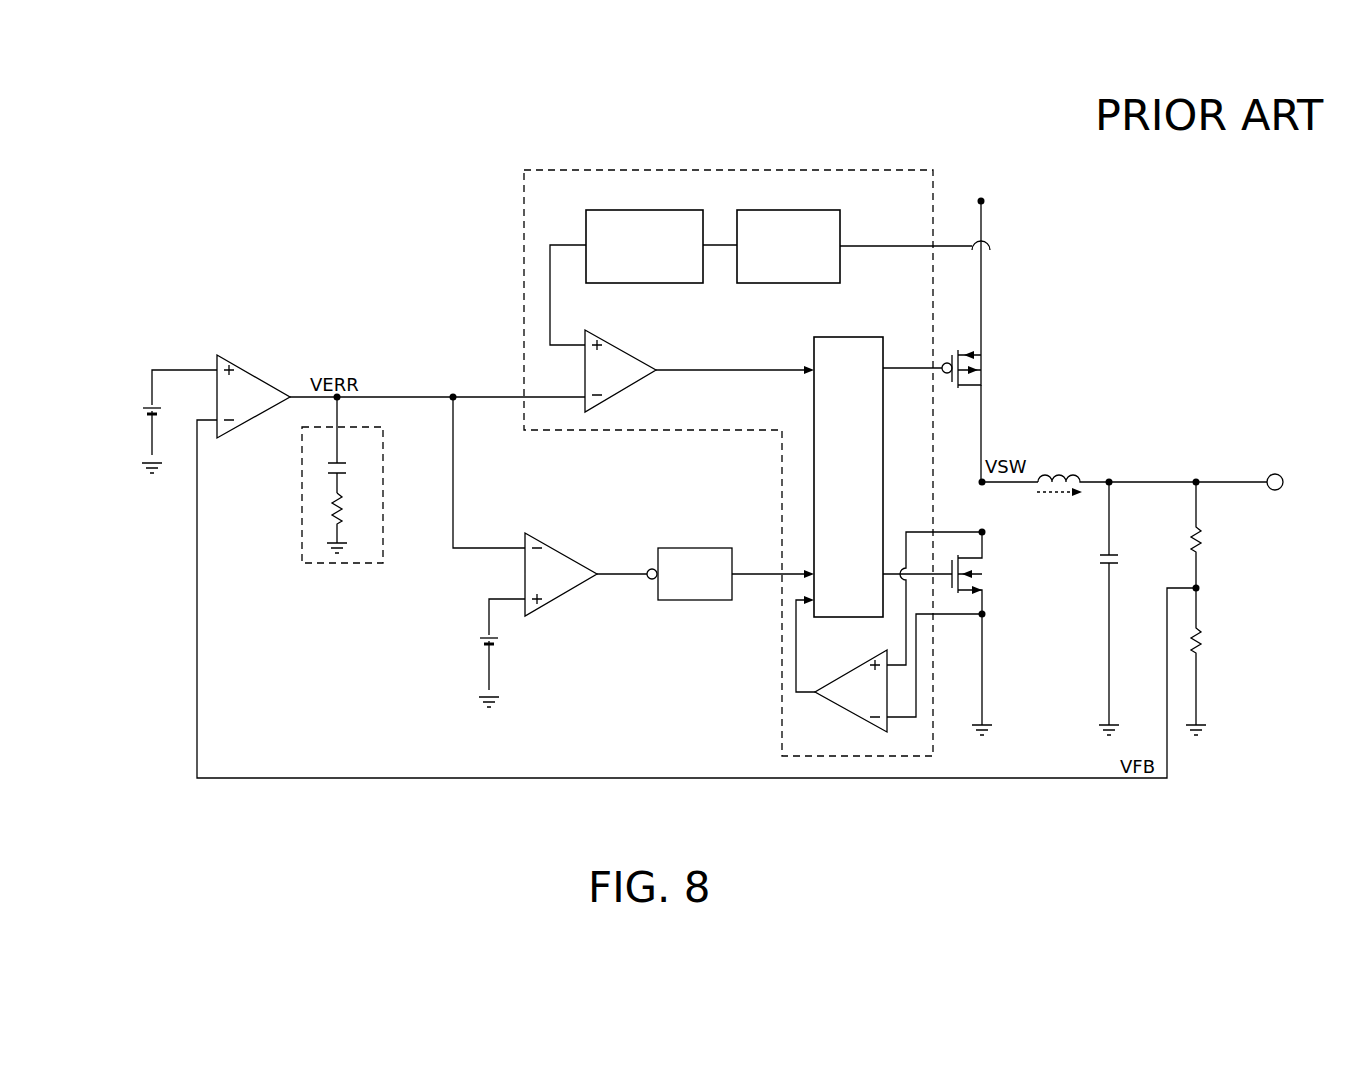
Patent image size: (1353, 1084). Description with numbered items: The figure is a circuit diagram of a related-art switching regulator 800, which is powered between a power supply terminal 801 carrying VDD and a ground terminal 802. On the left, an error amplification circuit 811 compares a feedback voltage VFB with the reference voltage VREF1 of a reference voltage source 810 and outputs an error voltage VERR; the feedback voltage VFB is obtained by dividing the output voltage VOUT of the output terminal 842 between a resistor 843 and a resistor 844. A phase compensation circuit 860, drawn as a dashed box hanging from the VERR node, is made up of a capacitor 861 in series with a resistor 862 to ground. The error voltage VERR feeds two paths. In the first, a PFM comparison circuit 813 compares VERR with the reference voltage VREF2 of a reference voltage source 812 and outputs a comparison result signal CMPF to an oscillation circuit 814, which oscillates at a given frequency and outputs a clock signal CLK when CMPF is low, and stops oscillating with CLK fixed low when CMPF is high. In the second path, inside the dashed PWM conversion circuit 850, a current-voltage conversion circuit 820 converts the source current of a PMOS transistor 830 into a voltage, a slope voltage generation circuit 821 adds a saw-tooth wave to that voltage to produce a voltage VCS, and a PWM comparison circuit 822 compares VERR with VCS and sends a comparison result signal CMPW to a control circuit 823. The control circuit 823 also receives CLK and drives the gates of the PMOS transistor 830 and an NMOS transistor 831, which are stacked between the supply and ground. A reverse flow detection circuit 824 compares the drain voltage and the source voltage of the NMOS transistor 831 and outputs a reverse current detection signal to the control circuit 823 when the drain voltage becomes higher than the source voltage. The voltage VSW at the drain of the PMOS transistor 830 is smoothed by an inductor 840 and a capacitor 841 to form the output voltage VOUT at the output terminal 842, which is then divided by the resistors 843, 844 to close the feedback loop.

The switching regulator 800 is at (352, 221).
The power supply terminal 801 is at (984, 200).
The ground terminal 802 is at (988, 726).
The reference voltage source 810 is at (156, 410).
The error amplification circuit 811 is at (246, 378).
The reference voltage source 812 is at (500, 640).
The PFM comparison circuit 813 is at (554, 550).
The oscillation circuit 814 is at (704, 548).
The current-voltage conversion circuit 820 is at (805, 201).
The slope voltage generation circuit 821 is at (672, 201).
The PWM comparison circuit 822 is at (628, 354).
The control circuit 823 is at (849, 337).
The reverse flow detection circuit 824 is at (852, 706).
The PMOS transistor 830 is at (978, 382).
The NMOS transistor 831 is at (984, 590).
The inductor 840 is at (1072, 474).
The capacitor 841 is at (1113, 555).
The output terminal 842 is at (1280, 474).
The resistor 843 is at (1200, 536).
The resistor 844 is at (1200, 637).
The PWM conversion circuit 850 is at (860, 170).
The phase compensation circuit 860 is at (342, 504).
The capacitor 861 is at (356, 456).
The resistor 862 is at (356, 506).